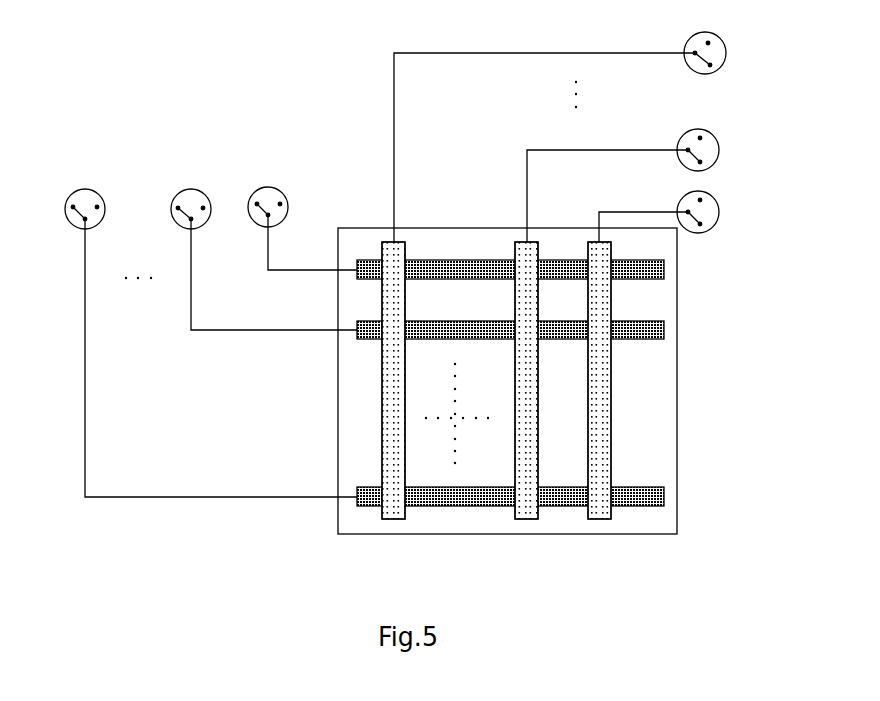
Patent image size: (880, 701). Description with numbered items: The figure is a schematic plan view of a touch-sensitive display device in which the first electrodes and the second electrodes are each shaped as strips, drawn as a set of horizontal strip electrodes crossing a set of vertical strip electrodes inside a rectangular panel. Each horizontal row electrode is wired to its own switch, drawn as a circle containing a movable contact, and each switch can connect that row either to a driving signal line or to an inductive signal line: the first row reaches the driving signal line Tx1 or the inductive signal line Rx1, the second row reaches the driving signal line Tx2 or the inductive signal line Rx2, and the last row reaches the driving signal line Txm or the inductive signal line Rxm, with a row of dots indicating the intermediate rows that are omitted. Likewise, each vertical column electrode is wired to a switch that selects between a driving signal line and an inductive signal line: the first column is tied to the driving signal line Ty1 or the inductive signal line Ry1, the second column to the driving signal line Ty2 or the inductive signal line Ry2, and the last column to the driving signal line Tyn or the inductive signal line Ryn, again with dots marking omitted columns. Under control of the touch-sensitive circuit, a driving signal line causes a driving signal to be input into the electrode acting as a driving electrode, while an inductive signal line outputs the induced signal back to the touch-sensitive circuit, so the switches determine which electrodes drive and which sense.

The driving signal line Txm is at (73, 207).
The inductive signal line Rxm is at (97, 207).
The driving signal line Tx2 is at (178, 208).
The inductive signal line Rx2 is at (203, 208).
The driving signal line Tx1 is at (257, 204).
The inductive signal line Rx1 is at (280, 204).
The driving signal line Tyn is at (708, 43).
The inductive signal line Ryn is at (710, 65).
The driving signal line Ty2 is at (700, 138).
The inductive signal line Ry2 is at (700, 162).
The driving signal line Ty1 is at (700, 200).
The inductive signal line Ry1 is at (700, 224).